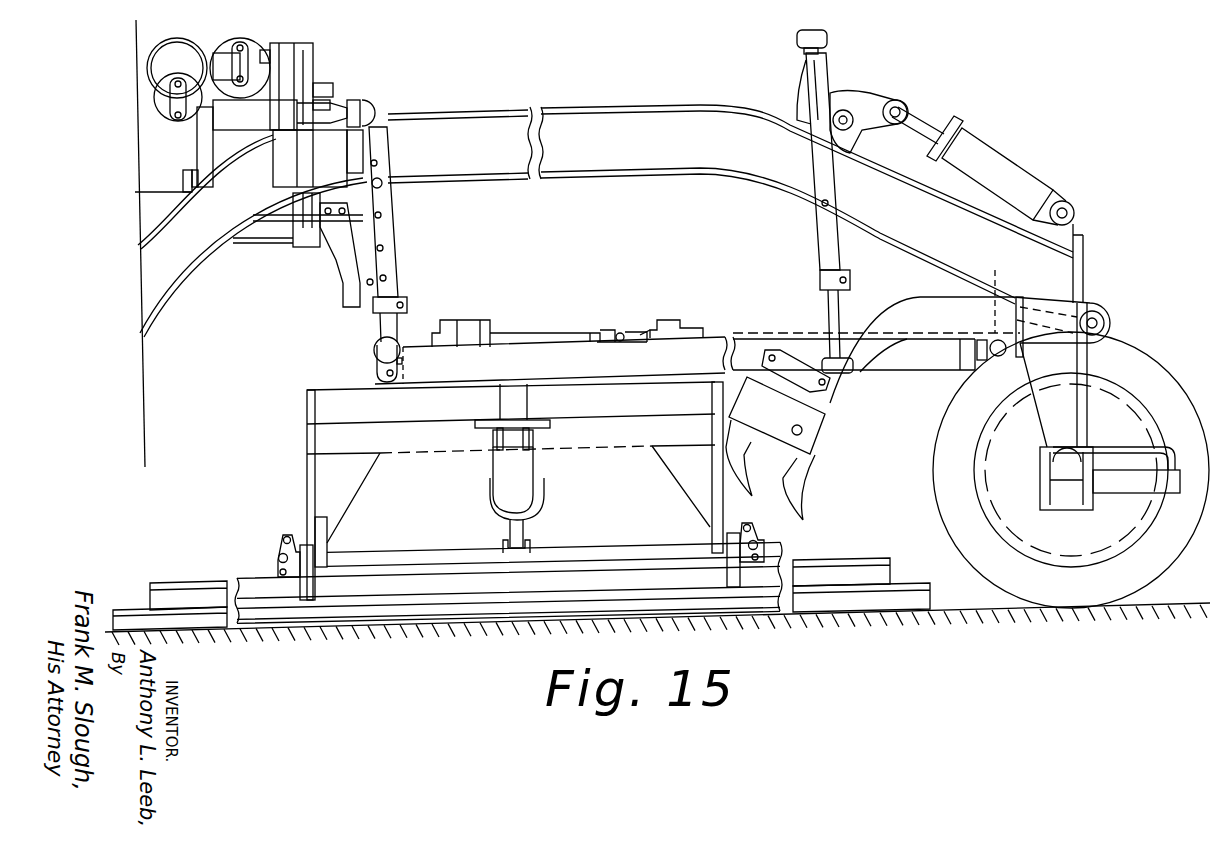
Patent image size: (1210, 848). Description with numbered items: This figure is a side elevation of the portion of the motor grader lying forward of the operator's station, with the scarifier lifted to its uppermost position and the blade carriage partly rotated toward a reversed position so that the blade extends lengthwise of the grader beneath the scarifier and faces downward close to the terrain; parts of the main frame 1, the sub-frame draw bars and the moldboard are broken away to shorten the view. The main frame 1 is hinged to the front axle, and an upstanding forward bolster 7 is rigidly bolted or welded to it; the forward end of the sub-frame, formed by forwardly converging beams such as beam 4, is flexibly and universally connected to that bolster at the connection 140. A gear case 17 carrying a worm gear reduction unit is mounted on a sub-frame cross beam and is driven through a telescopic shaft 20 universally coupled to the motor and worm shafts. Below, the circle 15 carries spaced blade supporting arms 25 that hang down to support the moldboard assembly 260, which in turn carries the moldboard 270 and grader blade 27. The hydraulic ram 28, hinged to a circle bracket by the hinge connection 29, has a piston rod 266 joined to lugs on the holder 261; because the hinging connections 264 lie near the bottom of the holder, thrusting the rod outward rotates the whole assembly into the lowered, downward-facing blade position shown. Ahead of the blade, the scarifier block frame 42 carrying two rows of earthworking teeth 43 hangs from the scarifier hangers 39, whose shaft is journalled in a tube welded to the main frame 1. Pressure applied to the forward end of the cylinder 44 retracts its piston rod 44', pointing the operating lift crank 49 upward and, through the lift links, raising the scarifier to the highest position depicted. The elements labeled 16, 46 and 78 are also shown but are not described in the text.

The main frame 1 is at (557, 117).
The forwardly converging beam 4 is at (752, 345).
The forward bolster 7 is at (983, 355).
The circle 15 is at (343, 388).
The motor unit 16 is at (482, 323).
The gear case 17 is at (688, 322).
The telescopic shaft 20 is at (563, 333).
The blade supporting arms 25 is at (307, 490).
The grader blade 27 is at (133, 610).
The hydraulic ram 28 is at (522, 466).
The hinge connection 29 is at (495, 437).
The scarifier hangers 39 is at (902, 306).
The scarifier block frame 42 is at (783, 415).
The earthworking teeth 43 is at (793, 477).
The cylinder 44 is at (1000, 170).
The piston rod 44' is at (934, 112).
The rocker bracket 46 is at (860, 90).
The operating lift cranks 49 is at (803, 68).
The lever arm 78 is at (823, 177).
The flexible universal connection 140 is at (987, 355).
The moldboard assembly 260 is at (277, 555).
The holder 261 is at (603, 555).
The hinging connections 264 is at (530, 545).
The piston rod 266 is at (508, 526).
The moldboard 270 is at (212, 567).